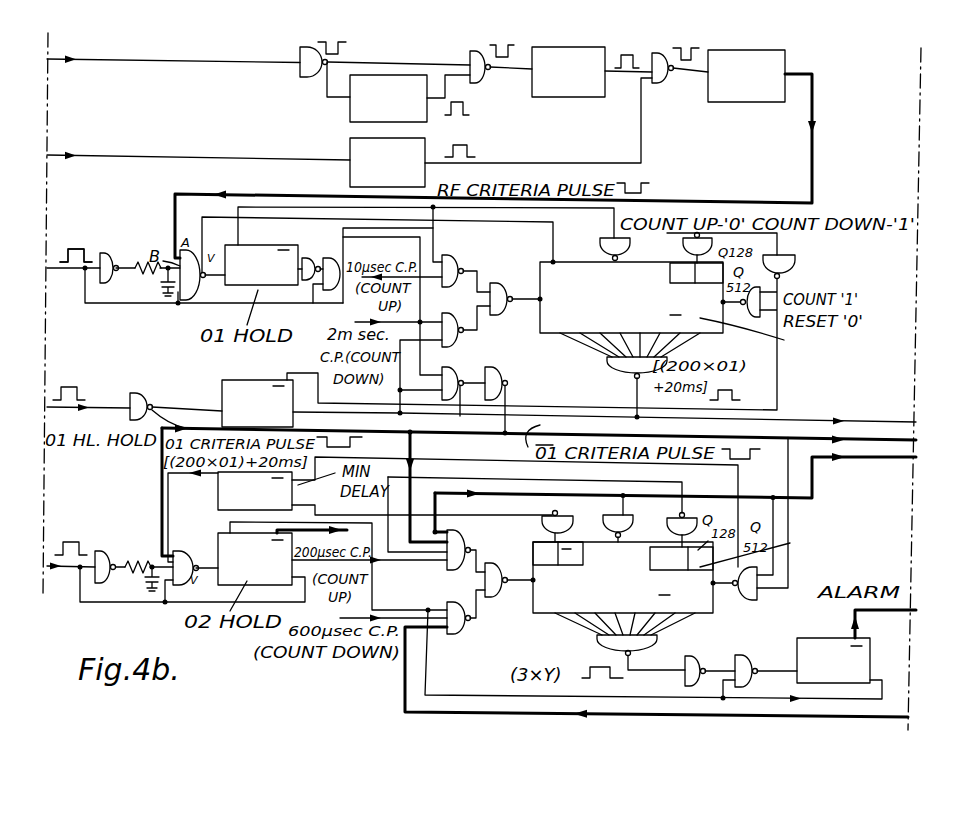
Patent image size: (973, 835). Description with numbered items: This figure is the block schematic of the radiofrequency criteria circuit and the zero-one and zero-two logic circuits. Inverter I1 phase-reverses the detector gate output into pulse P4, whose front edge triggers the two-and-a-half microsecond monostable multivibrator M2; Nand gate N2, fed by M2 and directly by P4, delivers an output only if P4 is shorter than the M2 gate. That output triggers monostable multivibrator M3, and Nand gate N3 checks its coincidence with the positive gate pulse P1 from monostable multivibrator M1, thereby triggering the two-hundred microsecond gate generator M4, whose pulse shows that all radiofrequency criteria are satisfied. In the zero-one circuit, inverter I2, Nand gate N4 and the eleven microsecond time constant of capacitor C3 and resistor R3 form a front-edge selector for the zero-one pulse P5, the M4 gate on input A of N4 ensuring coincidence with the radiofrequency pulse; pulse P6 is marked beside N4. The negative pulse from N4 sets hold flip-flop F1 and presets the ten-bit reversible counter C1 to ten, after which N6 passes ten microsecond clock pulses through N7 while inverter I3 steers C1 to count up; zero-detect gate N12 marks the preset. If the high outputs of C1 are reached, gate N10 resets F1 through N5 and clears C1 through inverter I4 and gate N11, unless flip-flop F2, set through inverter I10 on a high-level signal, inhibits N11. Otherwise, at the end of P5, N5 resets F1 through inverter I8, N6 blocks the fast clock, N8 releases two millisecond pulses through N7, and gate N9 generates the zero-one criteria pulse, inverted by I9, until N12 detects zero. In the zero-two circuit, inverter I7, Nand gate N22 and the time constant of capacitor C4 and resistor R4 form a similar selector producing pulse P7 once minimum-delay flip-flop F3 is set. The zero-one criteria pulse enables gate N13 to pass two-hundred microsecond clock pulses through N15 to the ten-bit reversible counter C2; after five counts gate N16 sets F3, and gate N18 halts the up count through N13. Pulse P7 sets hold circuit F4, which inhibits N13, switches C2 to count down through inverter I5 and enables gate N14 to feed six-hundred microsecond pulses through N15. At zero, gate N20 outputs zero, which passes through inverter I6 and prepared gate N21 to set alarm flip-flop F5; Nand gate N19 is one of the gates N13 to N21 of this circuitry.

The inverter I1 is at (304, 67).
The pulse P4 is at (332, 37).
The monostable multivibrator M2 is at (350, 108).
The monostable multivibrator M1 is at (350, 152).
The gate pulse P1 is at (460, 139).
The Nand gate N2 is at (492, 72).
The monostable multivibrator M3 is at (560, 97).
The Nand gate N3 is at (665, 78).
The gate generator M4 is at (738, 102).
The 01 pulse P5 is at (76, 242).
The inverter I2 is at (107, 254).
The resistor R3 is at (150, 275).
The capacitor C3 is at (165, 292).
The Nand gate N4 is at (187, 301).
The pulse P6 is at (213, 243).
The hold flip-flop F1 is at (256, 247).
The inverter I8 is at (309, 262).
The Nand gate N5 is at (328, 290).
The Nand gate N6 is at (446, 257).
The Nand gate N8 is at (452, 320).
The Nand gate N7 is at (501, 290).
The Nand gate N9 is at (456, 374).
The inverter I9 is at (499, 374).
The 10-bit reversible counter C1 is at (540, 270).
The inverter I3 is at (600, 247).
The Nand gate N10 is at (683, 240).
The inverter I4 is at (796, 258).
The Nand gate N11 is at (762, 290).
The zero-detect gate N12 is at (610, 364).
The flip-flop F2 is at (246, 380).
The inverter I10 is at (138, 397).
The minimum delay flip-flop F3 is at (218, 492).
The Nand gate N22 is at (188, 550).
The inverter I7 is at (105, 557).
The resistor R4 is at (132, 577).
The capacitor C4 is at (148, 590).
The hold circuit F4 is at (218, 541).
The negative pulse P7 is at (205, 597).
The Nand gate N13 is at (449, 570).
The Nand gate N14 is at (449, 604).
The Nand gate N15 is at (504, 572).
The Nand gate N16 is at (542, 525).
The inverter I5 is at (603, 518).
The Nand gate N18 is at (671, 519).
The 10-bit reversible counter C2 is at (533, 610).
The Nand gate N20 is at (598, 644).
The inverter I6 is at (689, 656).
The Nand gate N21 is at (746, 662).
The Nand gate N19 is at (740, 600).
The alarm flip-flop F5 is at (843, 652).